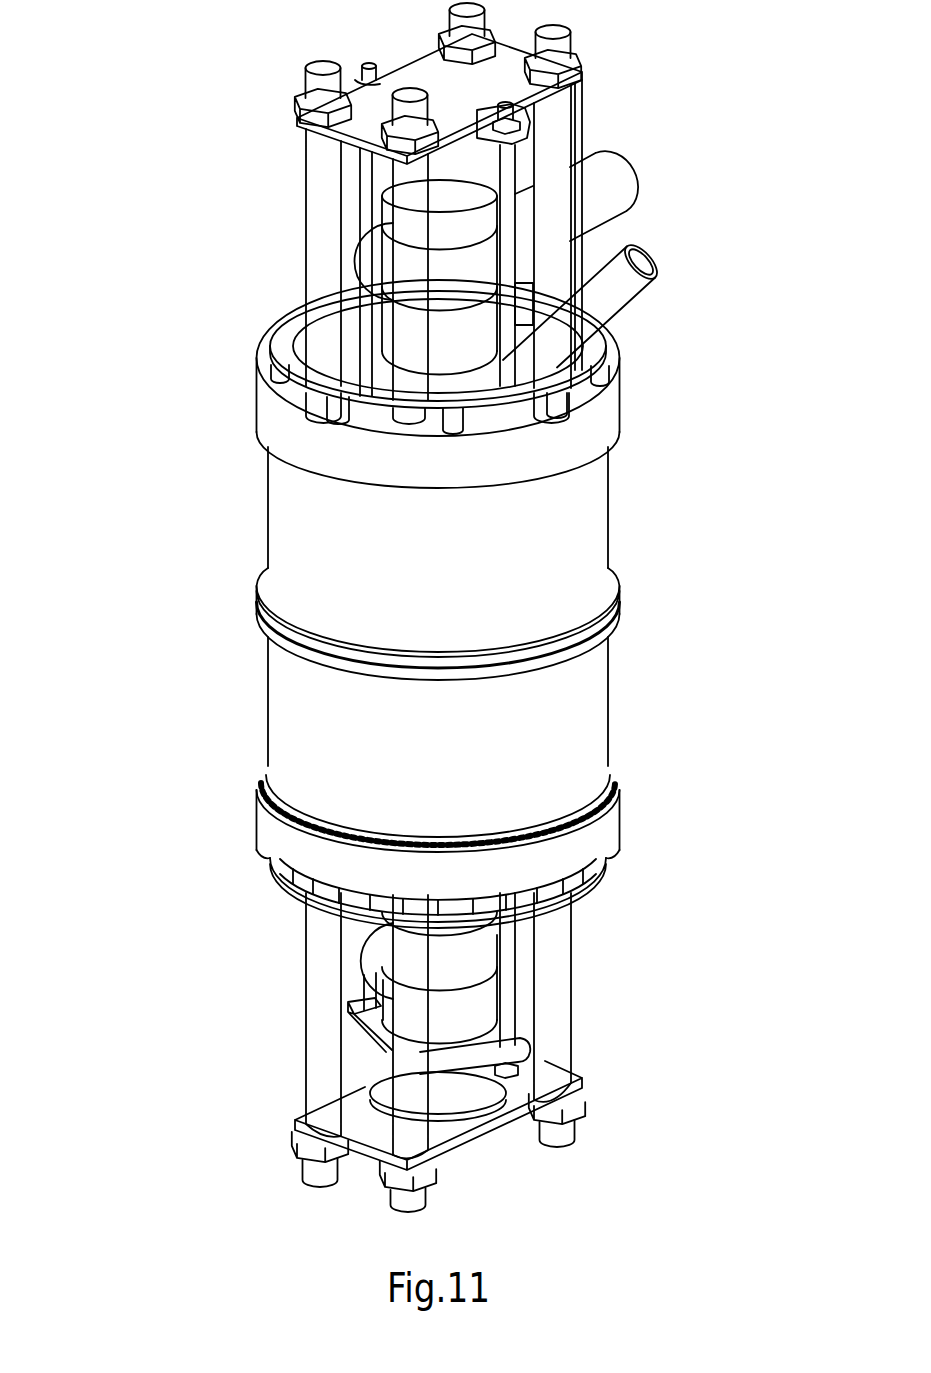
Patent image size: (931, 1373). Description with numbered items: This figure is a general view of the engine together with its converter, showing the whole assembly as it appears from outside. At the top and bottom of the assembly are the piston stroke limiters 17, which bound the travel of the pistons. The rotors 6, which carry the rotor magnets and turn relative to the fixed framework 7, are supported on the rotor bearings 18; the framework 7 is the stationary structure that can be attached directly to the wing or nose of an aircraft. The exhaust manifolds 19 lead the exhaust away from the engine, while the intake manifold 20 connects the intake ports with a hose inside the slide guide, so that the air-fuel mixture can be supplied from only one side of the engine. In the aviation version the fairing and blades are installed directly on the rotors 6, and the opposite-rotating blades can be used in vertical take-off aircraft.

The rotor 6 is at (740, 412).
The framework 7 is at (287, 842).
The piston stroke limiters 17 is at (382, 1097).
The rotor bearings 18 is at (315, 820).
The exhaust manifolds 19 is at (748, 915).
The intake manifold 20 is at (572, 332).